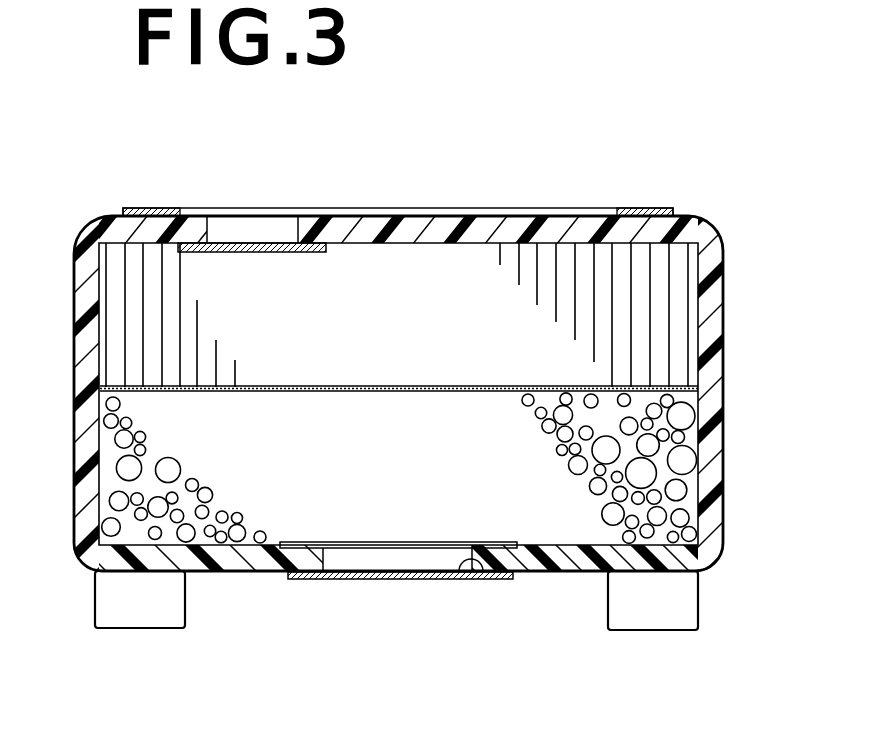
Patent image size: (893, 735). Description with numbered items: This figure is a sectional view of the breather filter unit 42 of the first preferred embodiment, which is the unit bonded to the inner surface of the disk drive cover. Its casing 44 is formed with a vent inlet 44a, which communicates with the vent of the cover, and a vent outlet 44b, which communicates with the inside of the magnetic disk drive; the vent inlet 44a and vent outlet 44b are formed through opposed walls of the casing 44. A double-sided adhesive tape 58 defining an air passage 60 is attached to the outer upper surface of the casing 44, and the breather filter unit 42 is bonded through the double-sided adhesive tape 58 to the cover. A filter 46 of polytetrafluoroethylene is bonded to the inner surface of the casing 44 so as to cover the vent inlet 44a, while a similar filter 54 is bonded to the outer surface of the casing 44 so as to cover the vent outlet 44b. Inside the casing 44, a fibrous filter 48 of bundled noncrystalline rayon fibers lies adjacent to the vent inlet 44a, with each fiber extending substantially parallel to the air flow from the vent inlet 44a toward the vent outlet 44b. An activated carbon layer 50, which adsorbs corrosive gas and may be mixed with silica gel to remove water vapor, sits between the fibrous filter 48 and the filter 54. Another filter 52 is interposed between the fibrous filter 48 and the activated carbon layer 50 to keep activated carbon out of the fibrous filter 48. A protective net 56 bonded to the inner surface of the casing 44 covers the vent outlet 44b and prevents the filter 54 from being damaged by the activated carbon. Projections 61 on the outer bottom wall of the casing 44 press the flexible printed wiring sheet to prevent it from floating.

The breather filter unit 42 is at (696, 218).
The casing 44 is at (707, 337).
The vent inlet 44a is at (282, 208).
The vent outlet 44b is at (462, 572).
The filter 46 is at (273, 252).
The fibrous filter 48 is at (667, 289).
The activated carbon layer 50 is at (660, 477).
The filter 52 is at (413, 386).
The filter 54 is at (355, 580).
The protective net 56 is at (395, 542).
The double-sided adhesive tape 58 is at (632, 212).
The air passage 60 is at (441, 215).
The projections 61 is at (140, 622).